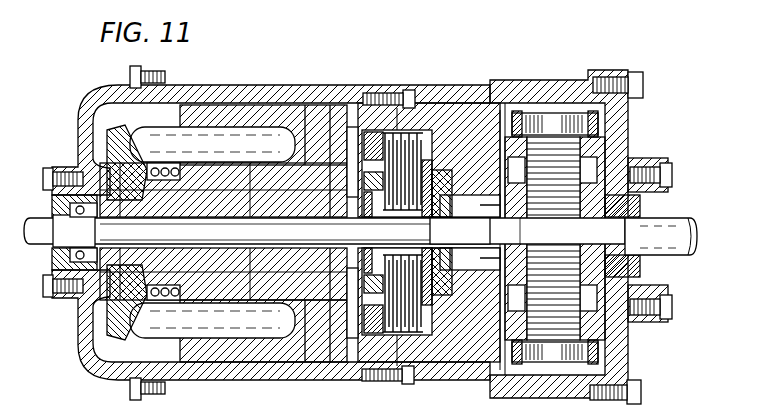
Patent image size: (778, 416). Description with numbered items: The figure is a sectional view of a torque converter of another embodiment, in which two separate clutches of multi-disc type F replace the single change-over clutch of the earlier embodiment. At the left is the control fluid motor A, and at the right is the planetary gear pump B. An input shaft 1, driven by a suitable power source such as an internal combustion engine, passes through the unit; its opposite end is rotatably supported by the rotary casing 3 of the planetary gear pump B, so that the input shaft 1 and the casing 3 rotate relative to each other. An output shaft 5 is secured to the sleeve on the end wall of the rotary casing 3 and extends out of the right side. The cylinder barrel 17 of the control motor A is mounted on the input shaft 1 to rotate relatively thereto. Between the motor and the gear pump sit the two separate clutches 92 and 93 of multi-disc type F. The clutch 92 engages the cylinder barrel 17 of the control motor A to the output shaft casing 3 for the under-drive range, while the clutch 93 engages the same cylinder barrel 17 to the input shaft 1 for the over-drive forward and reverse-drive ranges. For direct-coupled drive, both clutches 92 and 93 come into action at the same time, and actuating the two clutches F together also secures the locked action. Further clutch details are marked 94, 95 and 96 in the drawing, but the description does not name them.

The input shaft 1 is at (31, 218).
The rotary casing 3 is at (552, 103).
The output shaft 5 is at (684, 255).
The cylinder barrel 17 is at (252, 194).
The clutch 92 is at (415, 143).
The clutch 93 is at (410, 235).
The clutch hub 94 is at (455, 197).
The clutch actuating member 95 is at (378, 330).
The clutch spring member 96 is at (372, 182).
The control fluid motor A is at (259, 85).
The multi-disc clutches F is at (397, 85).
The planetary gear pump B is at (539, 80).